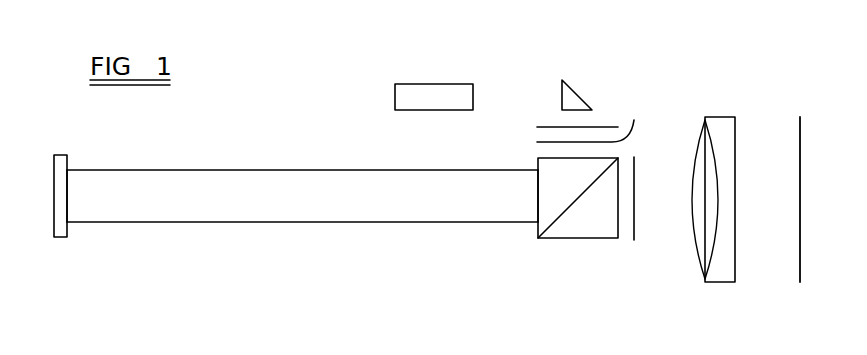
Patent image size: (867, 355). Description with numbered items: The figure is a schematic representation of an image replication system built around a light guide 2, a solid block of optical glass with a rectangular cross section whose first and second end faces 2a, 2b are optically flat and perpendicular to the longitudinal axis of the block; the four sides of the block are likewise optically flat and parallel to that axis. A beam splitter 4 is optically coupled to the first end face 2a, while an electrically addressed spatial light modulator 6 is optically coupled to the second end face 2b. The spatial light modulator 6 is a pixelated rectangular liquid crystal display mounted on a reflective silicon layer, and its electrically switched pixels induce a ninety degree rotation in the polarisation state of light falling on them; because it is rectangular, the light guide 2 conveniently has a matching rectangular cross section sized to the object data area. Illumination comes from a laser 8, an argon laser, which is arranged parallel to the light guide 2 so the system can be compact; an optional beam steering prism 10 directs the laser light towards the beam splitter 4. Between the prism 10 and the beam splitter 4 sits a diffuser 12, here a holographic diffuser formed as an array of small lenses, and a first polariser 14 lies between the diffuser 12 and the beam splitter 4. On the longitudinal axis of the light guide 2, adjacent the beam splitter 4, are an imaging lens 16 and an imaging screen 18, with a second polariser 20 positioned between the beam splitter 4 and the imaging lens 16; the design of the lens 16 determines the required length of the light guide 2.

The light guide 2 is at (302, 222).
The first end face 2a is at (537, 197).
The second end face 2b is at (67, 208).
The beam splitter 4 is at (577, 200).
The electrically addressed spatial light modulator 6 is at (56, 197).
The laser 8 is at (395, 99).
The beam steering prism 10 is at (562, 98).
The diffuser 12 is at (608, 127).
The first polariser 14 is at (634, 120).
The imaging lens 16 is at (718, 117).
The imaging screen 18 is at (800, 145).
The second polariser 20 is at (637, 173).